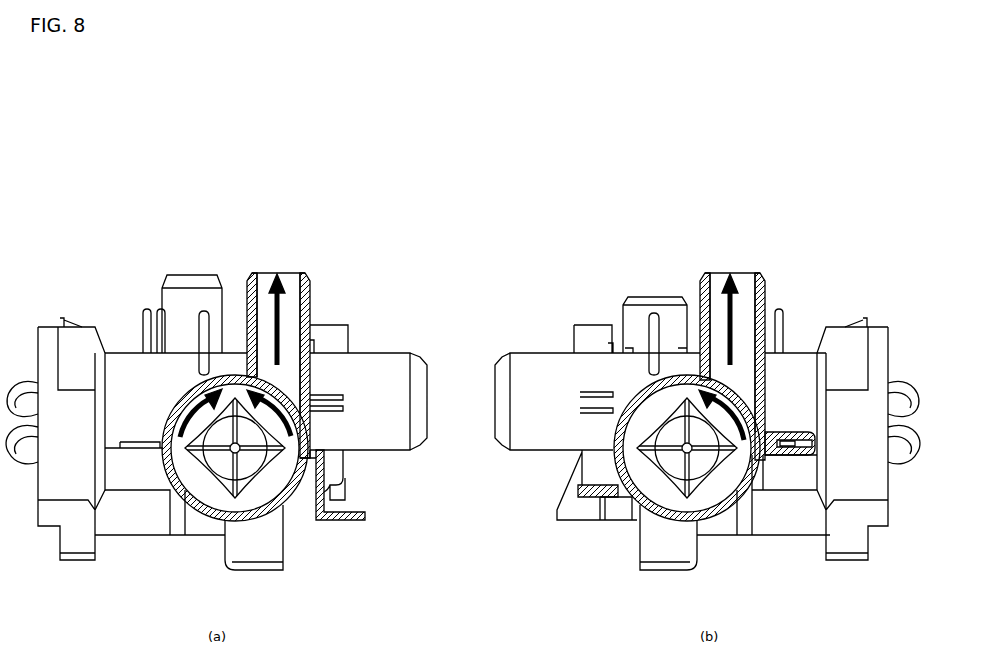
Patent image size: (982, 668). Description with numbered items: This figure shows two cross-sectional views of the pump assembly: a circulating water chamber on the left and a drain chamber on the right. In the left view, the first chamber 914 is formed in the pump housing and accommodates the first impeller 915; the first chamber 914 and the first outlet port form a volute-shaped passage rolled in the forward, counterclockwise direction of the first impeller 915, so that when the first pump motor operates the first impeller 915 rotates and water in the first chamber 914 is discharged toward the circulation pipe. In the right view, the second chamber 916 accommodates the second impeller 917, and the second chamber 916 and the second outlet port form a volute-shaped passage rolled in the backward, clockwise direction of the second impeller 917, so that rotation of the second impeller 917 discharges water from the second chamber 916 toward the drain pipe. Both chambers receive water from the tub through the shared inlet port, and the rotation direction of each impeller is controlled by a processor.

The first chamber 914 is at (200, 516).
The first impeller 915 is at (260, 457).
The second chamber 916 is at (615, 452).
The second impeller 917 is at (675, 465).